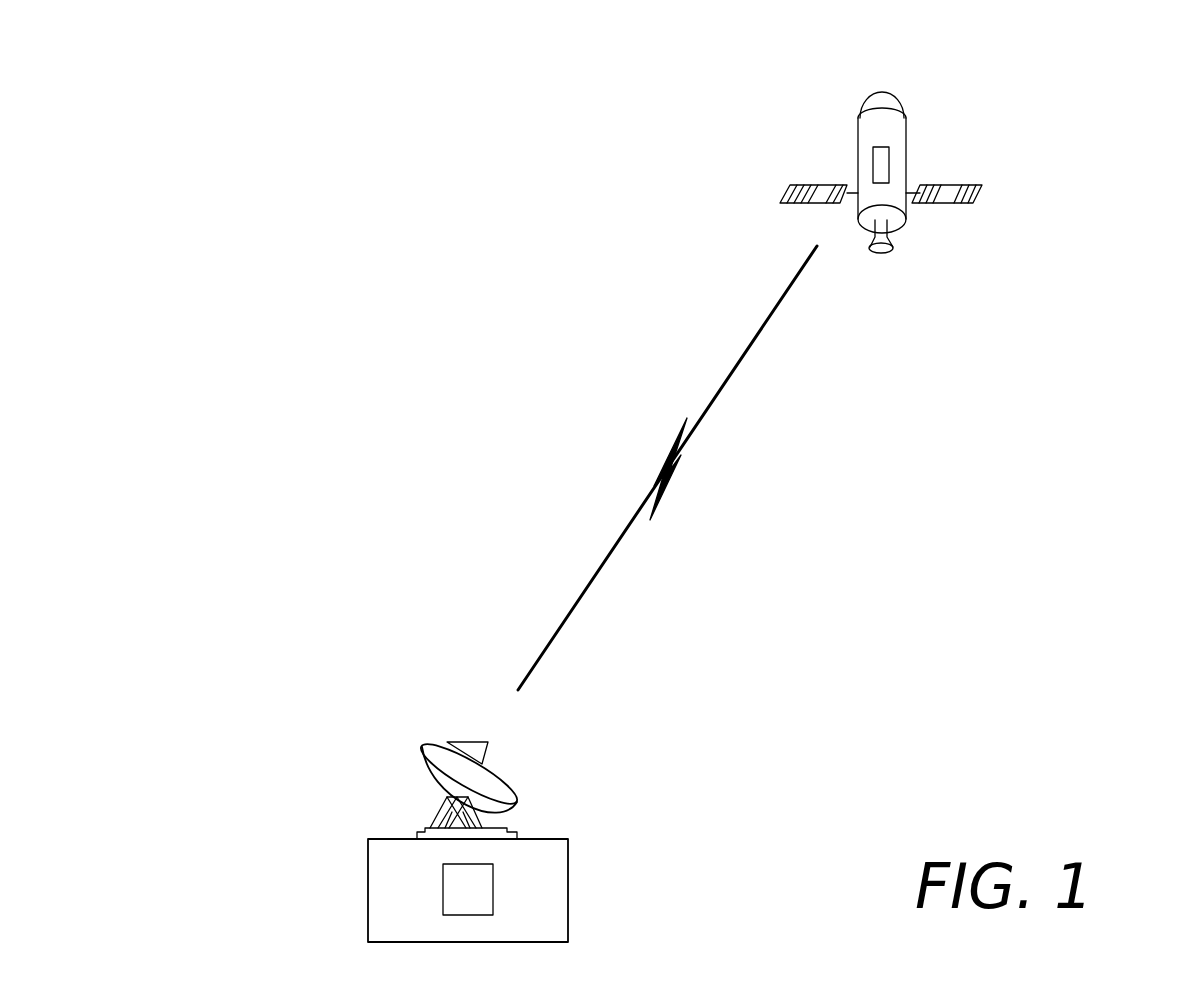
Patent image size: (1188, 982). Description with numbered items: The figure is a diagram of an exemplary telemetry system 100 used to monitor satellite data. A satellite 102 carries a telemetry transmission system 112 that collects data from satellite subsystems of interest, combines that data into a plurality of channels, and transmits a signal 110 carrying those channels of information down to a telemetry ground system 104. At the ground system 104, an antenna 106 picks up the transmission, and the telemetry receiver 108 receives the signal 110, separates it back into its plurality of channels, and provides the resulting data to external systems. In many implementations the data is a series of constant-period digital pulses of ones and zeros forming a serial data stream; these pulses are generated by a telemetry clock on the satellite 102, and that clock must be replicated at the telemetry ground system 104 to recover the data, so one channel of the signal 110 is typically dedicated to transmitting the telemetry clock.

The telemetry system 100 is at (363, 228).
The satellite 102 is at (895, 100).
The telemetry ground system 104 is at (293, 828).
The antenna 106 is at (423, 750).
The telemetry receiver 108 is at (492, 903).
The signal 110 is at (619, 541).
The telemetry transmission system 112 is at (893, 166).